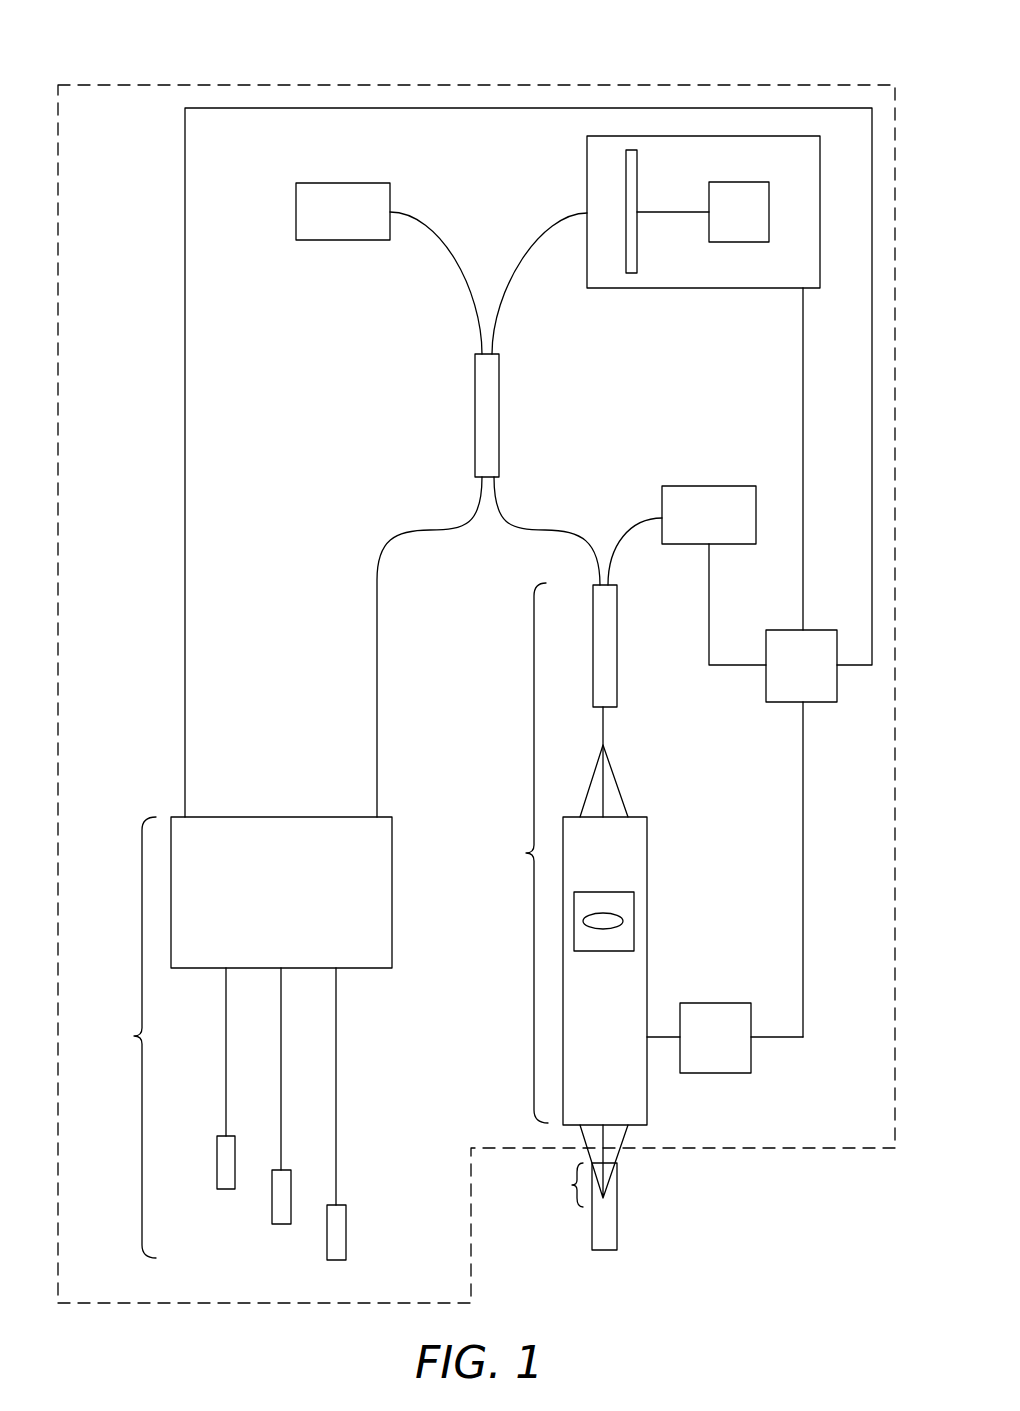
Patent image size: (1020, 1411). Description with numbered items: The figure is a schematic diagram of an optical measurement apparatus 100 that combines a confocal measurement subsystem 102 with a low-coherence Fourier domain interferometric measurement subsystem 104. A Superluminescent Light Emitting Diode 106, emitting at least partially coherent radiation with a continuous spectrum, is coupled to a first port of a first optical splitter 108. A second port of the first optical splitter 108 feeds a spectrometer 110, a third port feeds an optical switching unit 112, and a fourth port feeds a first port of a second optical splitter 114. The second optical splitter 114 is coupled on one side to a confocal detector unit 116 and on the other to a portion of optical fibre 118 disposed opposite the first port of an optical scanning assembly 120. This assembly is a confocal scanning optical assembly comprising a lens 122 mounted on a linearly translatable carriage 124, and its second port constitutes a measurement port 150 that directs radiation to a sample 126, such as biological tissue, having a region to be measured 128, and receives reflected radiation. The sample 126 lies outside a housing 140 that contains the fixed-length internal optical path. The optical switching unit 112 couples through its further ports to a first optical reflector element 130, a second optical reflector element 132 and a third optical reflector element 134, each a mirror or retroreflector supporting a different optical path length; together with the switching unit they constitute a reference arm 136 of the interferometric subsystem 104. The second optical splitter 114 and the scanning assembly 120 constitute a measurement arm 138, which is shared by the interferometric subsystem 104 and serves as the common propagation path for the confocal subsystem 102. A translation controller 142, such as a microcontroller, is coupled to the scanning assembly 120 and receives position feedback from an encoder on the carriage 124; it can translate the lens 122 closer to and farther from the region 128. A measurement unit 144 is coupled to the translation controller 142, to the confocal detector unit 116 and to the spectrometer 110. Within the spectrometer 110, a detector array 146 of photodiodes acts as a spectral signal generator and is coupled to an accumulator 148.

The optical measurement apparatus 100 is at (114, 63).
The confocal measurement subsystem 102 is at (306, 258).
The low-coherence Fourier domain interferometric measurement subsystem 104 is at (686, 308).
The Superluminescent Light Emitting Diode 106 is at (343, 211).
The first optical splitter 108 is at (500, 367).
The spectrometer 110 is at (587, 148).
The optical switching unit 112 is at (281, 892).
The second optical splitter 114 is at (617, 596).
The confocal detector unit 116 is at (714, 575).
The portion of optical fibre 118 is at (604, 723).
The optical scanning assembly 120 is at (647, 870).
The lens 122 is at (624, 920).
The linearly translatable carriage 124 is at (603, 952).
The sample 126 is at (617, 1232).
The region to be measured 128 is at (554, 1185).
The first optical reflector element 130 is at (226, 1190).
The second optical reflector element 132 is at (281, 1225).
The third optical reflector element 134 is at (346, 1217).
The reference arm 136 is at (121, 1037).
The measurement arm 138 is at (514, 853).
The housing 140 is at (862, 83).
The translation controller 142 is at (725, 1038).
The measurement unit 144 is at (801, 662).
The detector array 146 is at (637, 262).
The accumulator 148 is at (703, 212).
The measurement port 150 is at (634, 1146).